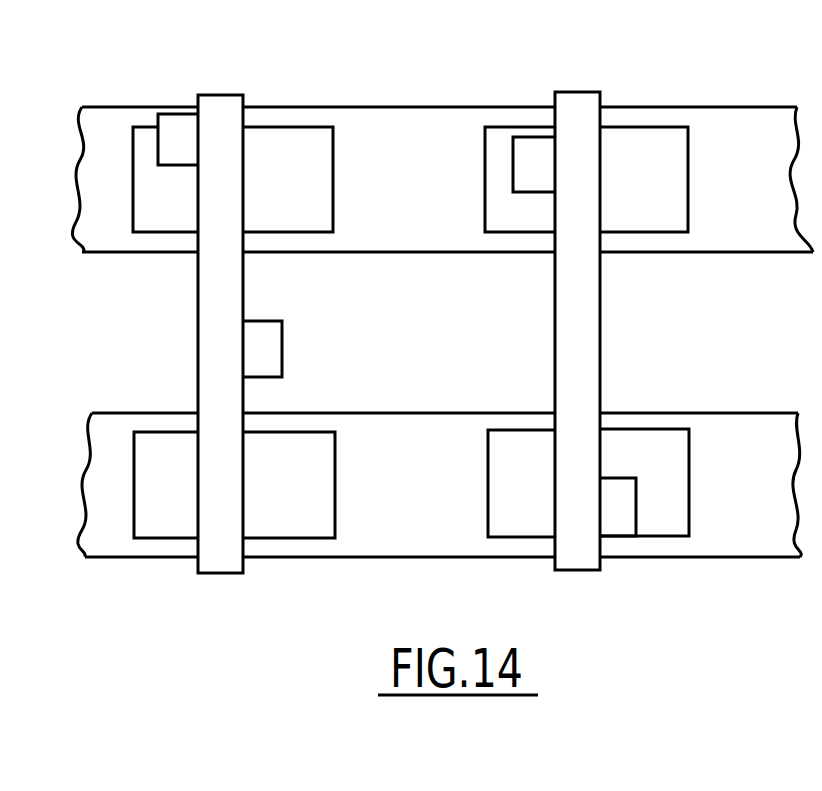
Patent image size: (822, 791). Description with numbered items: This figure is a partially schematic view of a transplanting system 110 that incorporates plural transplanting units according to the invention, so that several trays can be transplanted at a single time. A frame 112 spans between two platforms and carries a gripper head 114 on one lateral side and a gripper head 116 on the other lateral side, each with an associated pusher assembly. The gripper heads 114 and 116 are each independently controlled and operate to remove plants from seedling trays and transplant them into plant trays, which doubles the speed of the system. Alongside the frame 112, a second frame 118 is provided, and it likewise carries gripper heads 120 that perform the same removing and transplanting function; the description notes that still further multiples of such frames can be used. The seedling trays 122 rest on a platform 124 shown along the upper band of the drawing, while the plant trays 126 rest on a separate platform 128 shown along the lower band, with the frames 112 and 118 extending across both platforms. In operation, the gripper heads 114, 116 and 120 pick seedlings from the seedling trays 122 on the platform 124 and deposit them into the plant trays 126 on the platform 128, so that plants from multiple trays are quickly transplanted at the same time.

The memory cell array structure 110 is at (513, 90).
The frame 112 is at (213, 102).
The gripper head 114 is at (168, 122).
The gripper head 116 is at (273, 342).
The second frame 118 is at (592, 308).
The gripper heads 120 is at (520, 157).
The seedling trays 122 is at (305, 138).
The platform 124 is at (96, 233).
The plant trays 126 is at (500, 465).
The platform 128 is at (107, 549).